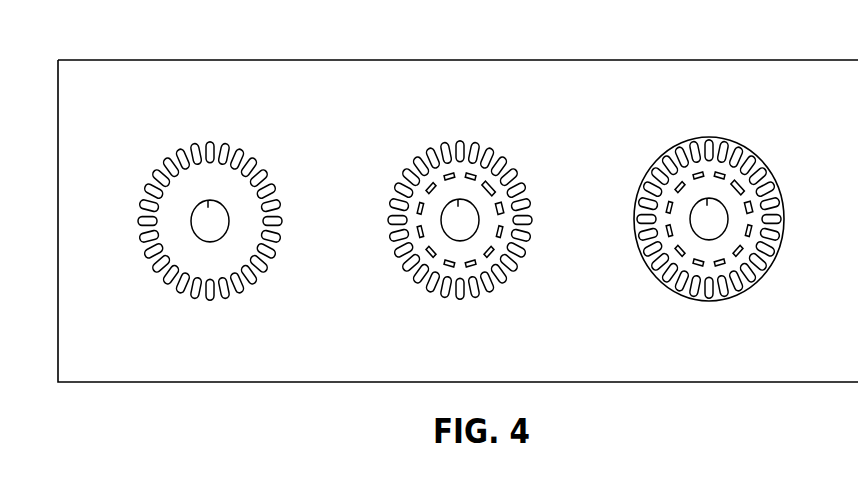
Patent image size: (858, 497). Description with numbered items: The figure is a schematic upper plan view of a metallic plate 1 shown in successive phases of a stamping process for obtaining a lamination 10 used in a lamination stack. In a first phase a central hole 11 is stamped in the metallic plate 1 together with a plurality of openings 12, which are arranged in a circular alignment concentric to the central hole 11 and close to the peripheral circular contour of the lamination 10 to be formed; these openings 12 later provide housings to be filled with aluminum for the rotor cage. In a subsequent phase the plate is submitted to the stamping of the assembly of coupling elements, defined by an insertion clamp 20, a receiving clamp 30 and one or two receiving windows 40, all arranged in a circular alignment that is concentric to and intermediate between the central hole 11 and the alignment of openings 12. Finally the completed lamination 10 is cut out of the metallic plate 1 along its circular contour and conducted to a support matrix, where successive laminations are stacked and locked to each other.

The metallic plate 1 is at (232, 60).
The lamination 10 is at (692, 136).
The central hole 11 is at (208, 201).
The openings 12 is at (151, 186).
The insertion clamp 20 is at (475, 173).
The receiving clamp 30 is at (496, 187).
The receiving window 40 is at (503, 203).